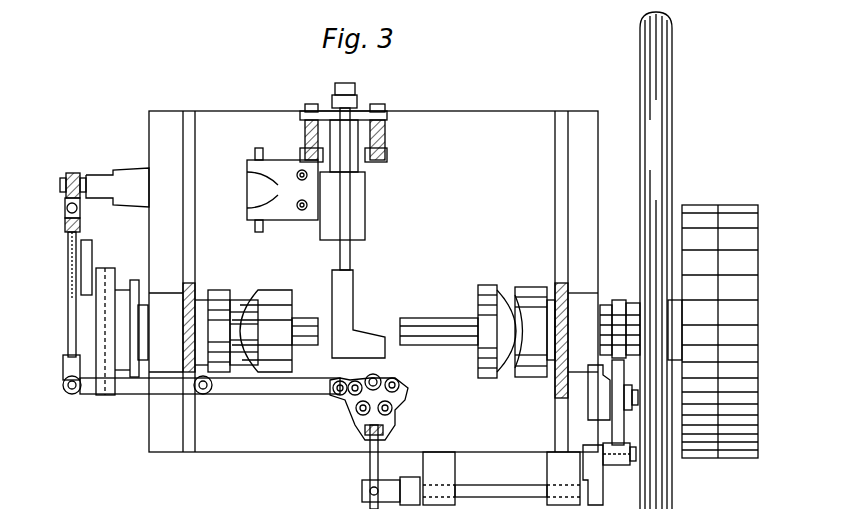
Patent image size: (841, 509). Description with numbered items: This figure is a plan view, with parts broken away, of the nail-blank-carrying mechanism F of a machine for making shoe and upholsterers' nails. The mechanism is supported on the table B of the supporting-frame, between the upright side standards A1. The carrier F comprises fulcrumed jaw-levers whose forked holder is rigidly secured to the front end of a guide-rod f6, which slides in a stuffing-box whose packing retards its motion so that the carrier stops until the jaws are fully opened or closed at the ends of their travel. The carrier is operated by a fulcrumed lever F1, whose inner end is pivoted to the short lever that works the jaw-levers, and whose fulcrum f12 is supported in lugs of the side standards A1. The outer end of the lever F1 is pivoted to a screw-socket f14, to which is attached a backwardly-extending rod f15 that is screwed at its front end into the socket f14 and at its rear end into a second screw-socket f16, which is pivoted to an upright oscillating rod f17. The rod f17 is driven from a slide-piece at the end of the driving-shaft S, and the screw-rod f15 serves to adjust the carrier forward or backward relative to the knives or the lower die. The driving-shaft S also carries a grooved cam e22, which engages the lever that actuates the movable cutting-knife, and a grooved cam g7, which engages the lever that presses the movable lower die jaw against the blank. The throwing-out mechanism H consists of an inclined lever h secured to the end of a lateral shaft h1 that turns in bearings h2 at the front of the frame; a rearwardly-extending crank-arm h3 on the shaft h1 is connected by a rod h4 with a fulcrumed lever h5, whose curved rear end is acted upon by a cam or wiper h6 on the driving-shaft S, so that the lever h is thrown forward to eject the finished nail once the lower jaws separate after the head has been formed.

The side standards A1 is at (373, 281).
The table B is at (427, 258).
The driving-shaft S is at (385, 320).
The grooved cam e22 is at (243, 324).
The grooved cam g7 is at (516, 333).
The guide-rod f6 is at (356, 92).
The fulcrum f12 is at (208, 394).
The screw-socket f14 is at (63, 375).
The backwardly-extending rod f15 is at (68, 298).
The second screw-socket f16 is at (65, 222).
The upright oscillating rod f17 is at (70, 173).
The fulcrumed lever F1 is at (210, 396).
The nail-blank-carrying mechanism F is at (378, 407).
The throwing-out mechanism H is at (370, 468).
The lever h is at (380, 467).
The lateral shaft h1 is at (501, 497).
The bearings h2 is at (501, 478).
The crank-arm h3 is at (603, 472).
The rod h4 is at (621, 461).
The fulcrumed lever h5 is at (616, 401).
The cam or wiper h6 is at (641, 321).